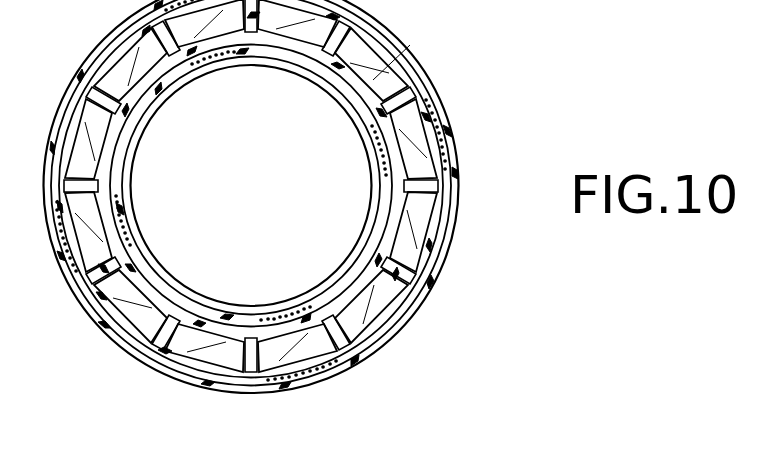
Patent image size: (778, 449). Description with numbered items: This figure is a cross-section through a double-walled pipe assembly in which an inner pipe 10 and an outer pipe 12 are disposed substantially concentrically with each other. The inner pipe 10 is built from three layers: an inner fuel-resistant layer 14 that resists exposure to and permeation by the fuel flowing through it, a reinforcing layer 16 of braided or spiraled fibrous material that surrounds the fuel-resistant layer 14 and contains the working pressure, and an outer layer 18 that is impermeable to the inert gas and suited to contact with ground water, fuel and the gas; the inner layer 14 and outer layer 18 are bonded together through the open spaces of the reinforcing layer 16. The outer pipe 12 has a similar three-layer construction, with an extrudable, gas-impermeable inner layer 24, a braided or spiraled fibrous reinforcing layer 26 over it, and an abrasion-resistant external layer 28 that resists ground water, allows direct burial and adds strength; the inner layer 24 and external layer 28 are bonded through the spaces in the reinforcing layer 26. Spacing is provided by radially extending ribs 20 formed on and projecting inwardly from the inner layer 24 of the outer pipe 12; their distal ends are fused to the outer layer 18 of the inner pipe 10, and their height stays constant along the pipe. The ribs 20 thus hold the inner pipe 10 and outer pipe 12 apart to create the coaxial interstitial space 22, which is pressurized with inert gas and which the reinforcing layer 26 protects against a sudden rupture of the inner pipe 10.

The inner pipe 10 is at (363, 74).
The outer pipe 12 is at (393, 70).
The inner fuel-resistant layer 14 is at (183, 297).
The reinforcing layer 16 is at (118, 233).
The outer layer 18 is at (107, 191).
The ribs 20 is at (342, 343).
The interstitial space 22 is at (377, 307).
The inner layer 24 is at (420, 267).
The reinforcing layer 26 is at (440, 133).
The external layer 28 is at (460, 196).